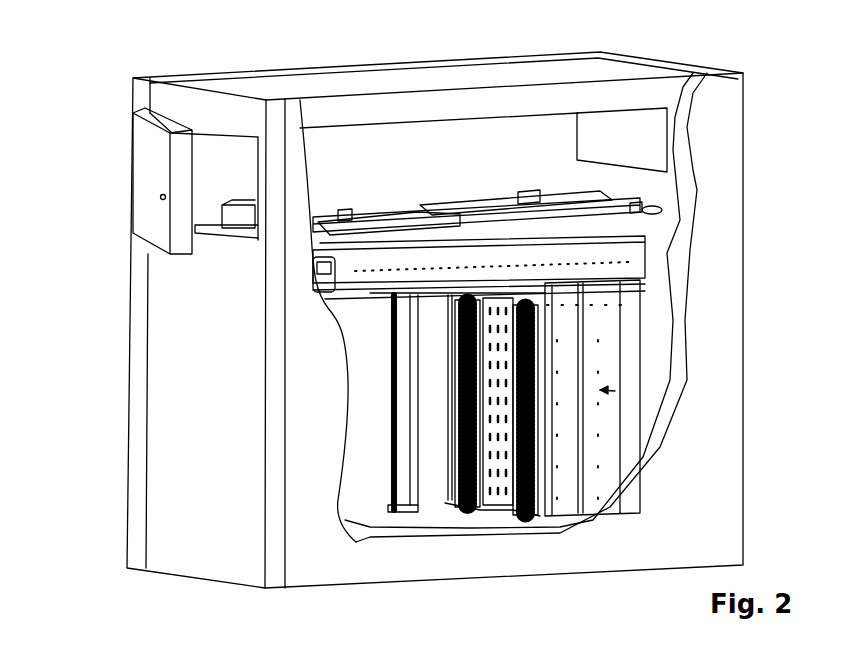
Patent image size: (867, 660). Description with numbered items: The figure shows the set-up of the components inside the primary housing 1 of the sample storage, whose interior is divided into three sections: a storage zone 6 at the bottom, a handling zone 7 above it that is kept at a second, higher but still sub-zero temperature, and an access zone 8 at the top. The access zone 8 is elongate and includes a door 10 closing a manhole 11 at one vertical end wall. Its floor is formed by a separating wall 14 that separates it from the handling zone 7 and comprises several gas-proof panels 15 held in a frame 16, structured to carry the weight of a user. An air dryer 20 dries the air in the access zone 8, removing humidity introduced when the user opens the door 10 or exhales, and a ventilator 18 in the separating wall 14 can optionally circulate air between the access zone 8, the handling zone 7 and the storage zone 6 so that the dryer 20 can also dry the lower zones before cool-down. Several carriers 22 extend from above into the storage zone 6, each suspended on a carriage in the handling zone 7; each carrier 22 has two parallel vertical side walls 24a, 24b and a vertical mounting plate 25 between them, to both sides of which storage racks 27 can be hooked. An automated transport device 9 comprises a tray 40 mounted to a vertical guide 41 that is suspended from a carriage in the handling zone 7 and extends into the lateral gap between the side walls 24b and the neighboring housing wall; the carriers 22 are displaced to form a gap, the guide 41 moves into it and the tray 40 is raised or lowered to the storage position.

The primary housing 1 is at (665, 60).
The storage zone 6 is at (655, 332).
The handling zone 7 is at (648, 253).
The access zone 8 is at (467, 137).
The automated transport device 9 is at (432, 213).
The door 10 is at (147, 148).
The manhole 11 is at (208, 140).
The separating wall 14 is at (668, 218).
The gas-proof panels 15 is at (412, 217).
The frame 16 is at (345, 217).
The ventilator 18 is at (640, 212).
The air dryer 20 is at (653, 132).
The carriers 22 is at (615, 391).
The side wall 24a is at (550, 500).
The side wall 24b is at (447, 428).
The mounting plate 25 is at (487, 502).
The storage racks 27 is at (455, 375).
The tray 40 is at (313, 264).
The vertical guide 41 is at (385, 400).